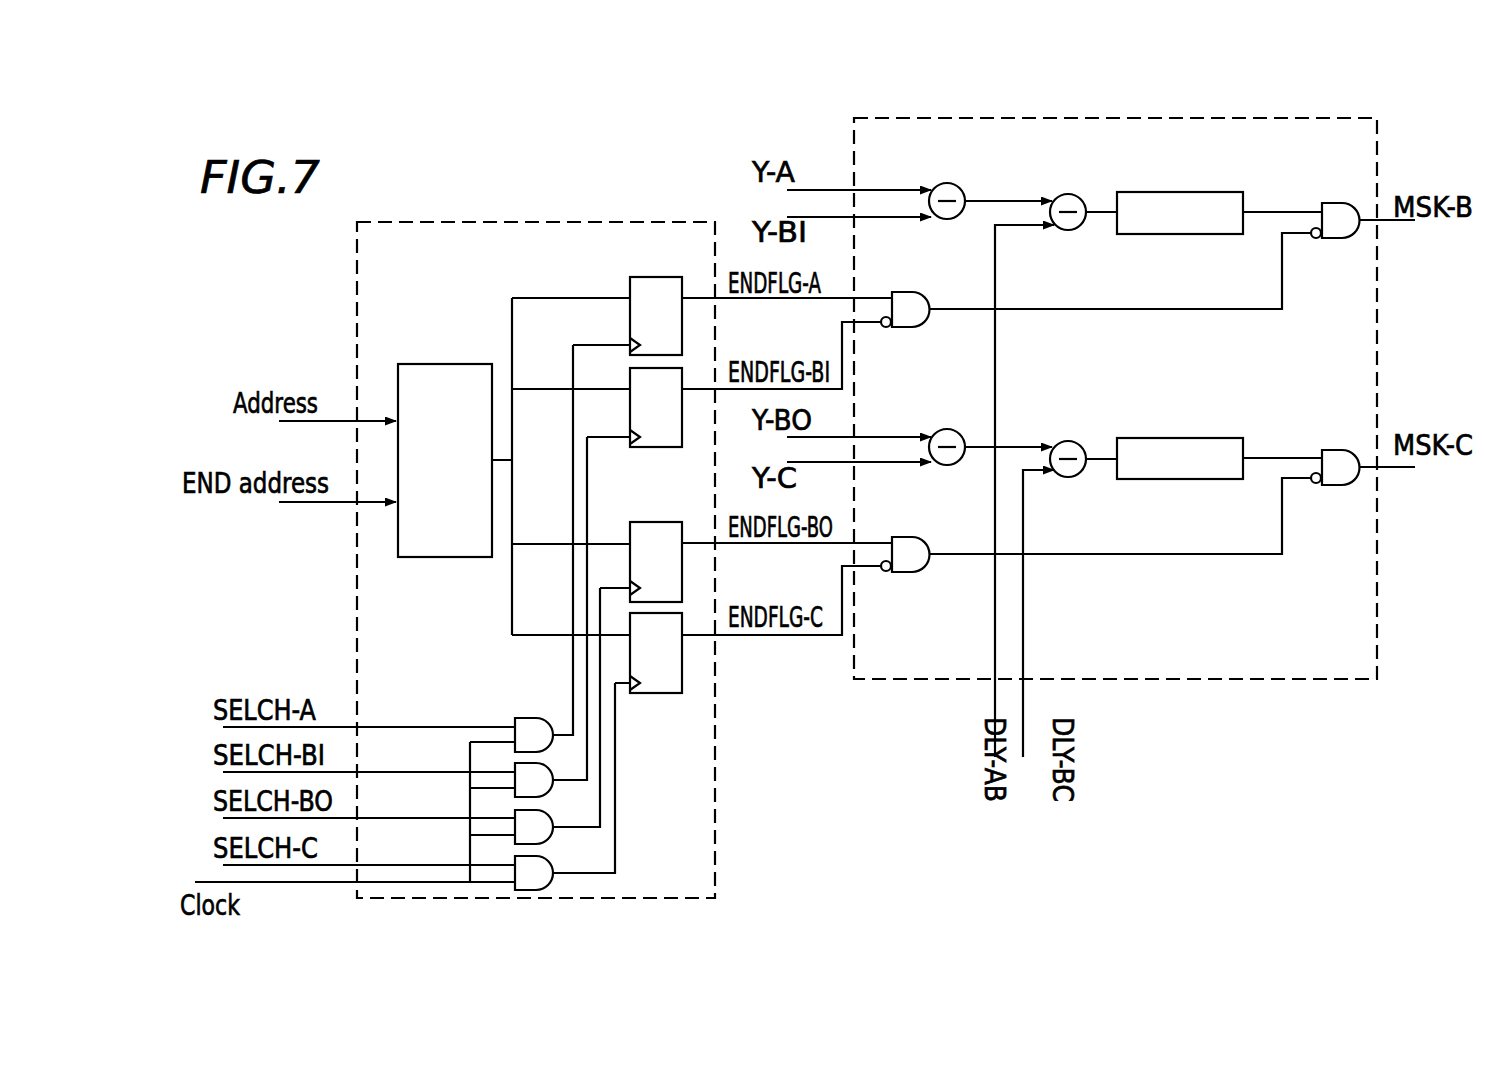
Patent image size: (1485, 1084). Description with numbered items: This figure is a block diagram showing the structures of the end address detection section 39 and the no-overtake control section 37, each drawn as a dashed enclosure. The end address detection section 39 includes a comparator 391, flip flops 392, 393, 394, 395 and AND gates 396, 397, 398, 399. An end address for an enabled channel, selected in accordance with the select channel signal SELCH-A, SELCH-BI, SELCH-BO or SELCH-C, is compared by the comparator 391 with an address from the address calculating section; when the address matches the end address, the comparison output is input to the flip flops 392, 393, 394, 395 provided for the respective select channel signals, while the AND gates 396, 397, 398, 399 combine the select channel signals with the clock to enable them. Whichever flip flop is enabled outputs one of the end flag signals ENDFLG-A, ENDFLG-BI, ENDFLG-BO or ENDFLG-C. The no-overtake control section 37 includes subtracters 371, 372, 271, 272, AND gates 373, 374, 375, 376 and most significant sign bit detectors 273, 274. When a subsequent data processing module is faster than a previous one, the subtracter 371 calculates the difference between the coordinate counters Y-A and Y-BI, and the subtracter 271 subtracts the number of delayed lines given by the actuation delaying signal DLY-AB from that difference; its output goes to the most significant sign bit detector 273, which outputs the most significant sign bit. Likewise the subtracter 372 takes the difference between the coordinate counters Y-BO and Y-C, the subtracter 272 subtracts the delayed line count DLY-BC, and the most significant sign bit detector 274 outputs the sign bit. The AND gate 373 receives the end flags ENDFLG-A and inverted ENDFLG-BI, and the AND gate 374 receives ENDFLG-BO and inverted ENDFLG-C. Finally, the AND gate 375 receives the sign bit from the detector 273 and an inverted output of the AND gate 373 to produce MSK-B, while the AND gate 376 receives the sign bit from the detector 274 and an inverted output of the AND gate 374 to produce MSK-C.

The no-overtake control section 37 is at (1300, 680).
The end address detection section 39 is at (652, 222).
The comparator 391 is at (462, 364).
The flip flop 392 is at (650, 277).
The flip flop 393 is at (665, 447).
The flip flop 394 is at (650, 522).
The flip flop 395 is at (663, 693).
The AND gate 396 is at (522, 716).
The AND gate 397 is at (548, 795).
The AND gate 398 is at (548, 841).
The AND gate 399 is at (532, 892).
The subtracter 371 is at (952, 219).
The subtracter 372 is at (952, 465).
The subtracter 271 is at (1072, 230).
The subtracter 272 is at (1072, 477).
The most significant sign bit detector 273 is at (1228, 192).
The most significant sign bit detector 274 is at (1228, 438).
The AND gate 373 is at (928, 327).
The AND gate 374 is at (928, 572).
The AND gate 375 is at (1355, 238).
The AND gate 376 is at (1355, 485).